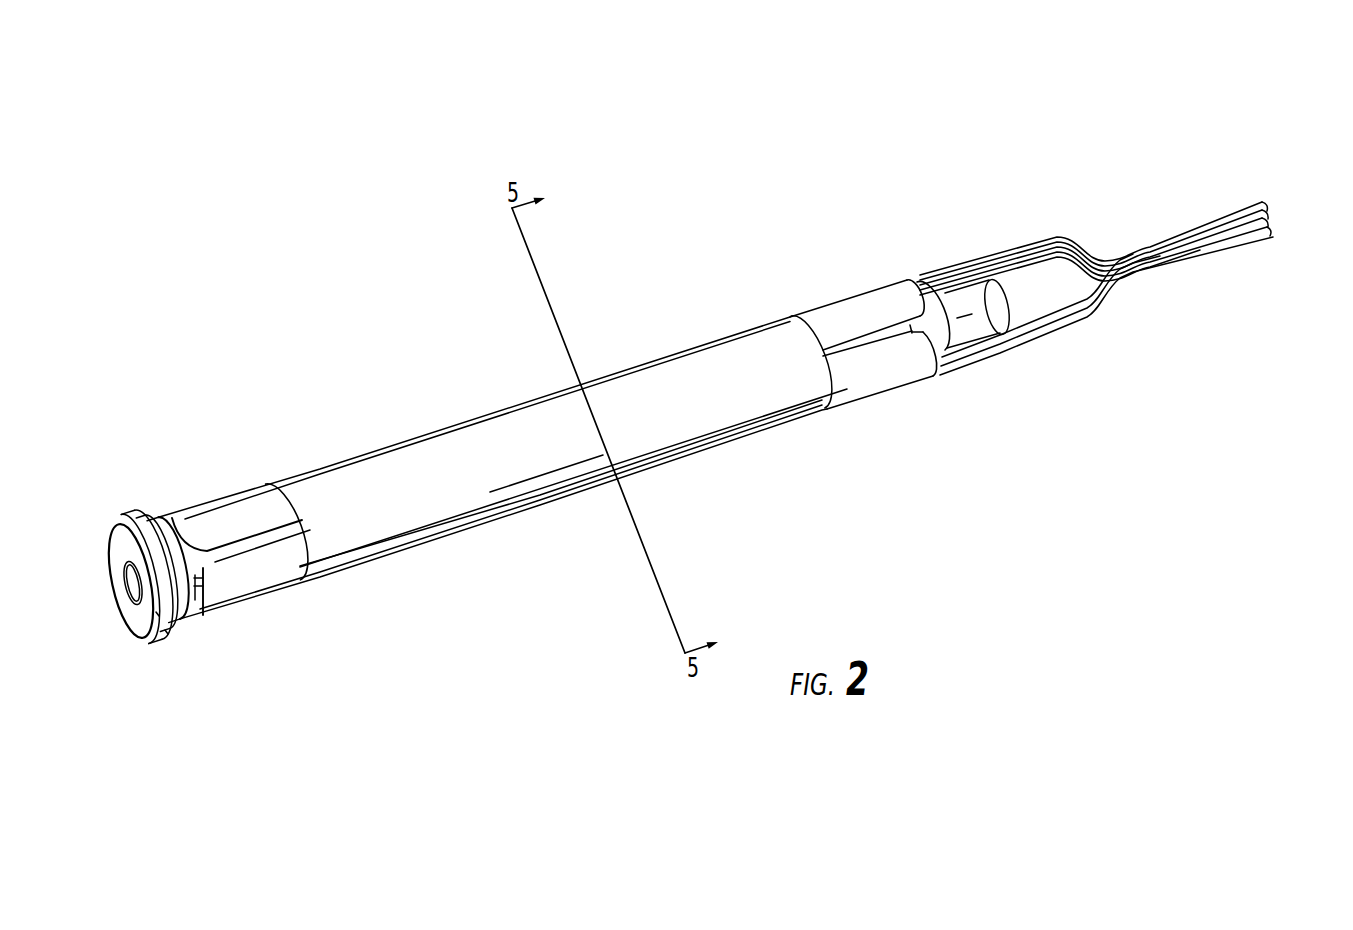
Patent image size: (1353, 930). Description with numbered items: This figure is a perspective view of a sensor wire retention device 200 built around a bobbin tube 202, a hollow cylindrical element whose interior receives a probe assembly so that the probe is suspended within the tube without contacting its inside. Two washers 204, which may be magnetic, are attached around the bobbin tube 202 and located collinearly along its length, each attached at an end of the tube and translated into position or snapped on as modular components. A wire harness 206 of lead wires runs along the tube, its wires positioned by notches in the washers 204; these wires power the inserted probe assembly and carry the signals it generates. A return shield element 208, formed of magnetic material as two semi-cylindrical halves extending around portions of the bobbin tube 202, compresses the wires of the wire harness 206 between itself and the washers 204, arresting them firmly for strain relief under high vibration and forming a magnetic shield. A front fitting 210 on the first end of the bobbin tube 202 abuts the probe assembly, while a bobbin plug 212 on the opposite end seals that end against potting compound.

The sensor wire retention device 200 is at (178, 153).
The bobbin tube 202 is at (124, 585).
The washers 204 is at (209, 568).
The wire harness 206 is at (1279, 201).
The return shield element 208 is at (210, 506).
The front fitting 210 is at (112, 516).
The bobbin plug 212 is at (1017, 283).